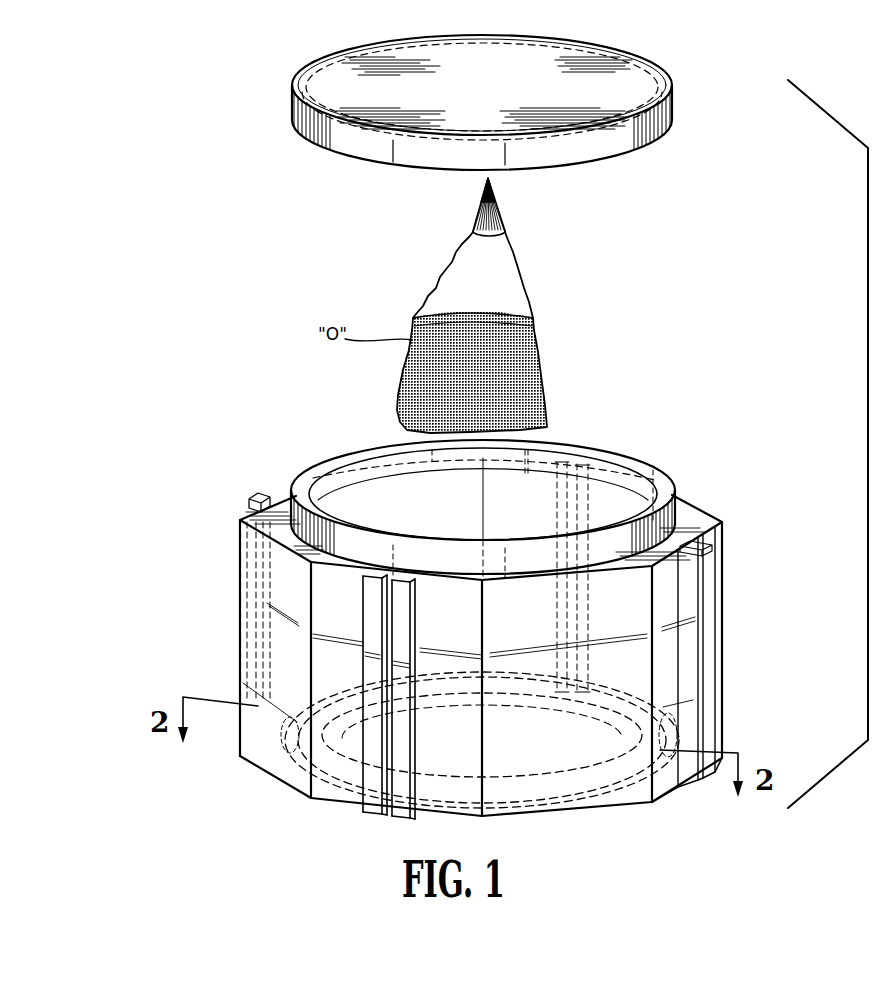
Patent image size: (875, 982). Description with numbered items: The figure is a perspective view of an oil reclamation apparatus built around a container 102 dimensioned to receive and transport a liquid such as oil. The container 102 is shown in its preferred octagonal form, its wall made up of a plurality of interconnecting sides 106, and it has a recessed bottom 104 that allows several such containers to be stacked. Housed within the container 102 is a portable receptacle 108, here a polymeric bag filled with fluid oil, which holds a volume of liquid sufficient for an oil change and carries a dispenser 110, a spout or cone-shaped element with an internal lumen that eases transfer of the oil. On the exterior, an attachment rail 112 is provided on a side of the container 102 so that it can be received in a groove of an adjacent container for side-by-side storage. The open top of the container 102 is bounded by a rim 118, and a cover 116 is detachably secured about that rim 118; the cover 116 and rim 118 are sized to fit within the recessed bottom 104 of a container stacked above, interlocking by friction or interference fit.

The container 102 is at (486, 645).
The recessed bottom 104 is at (618, 778).
The interconnecting sides 106 is at (284, 587).
The portable receptacle 108 is at (547, 343).
The dispenser 110 is at (500, 202).
The attachment rail 112 is at (249, 504).
The cover 116 is at (610, 75).
The rim 118 is at (630, 463).